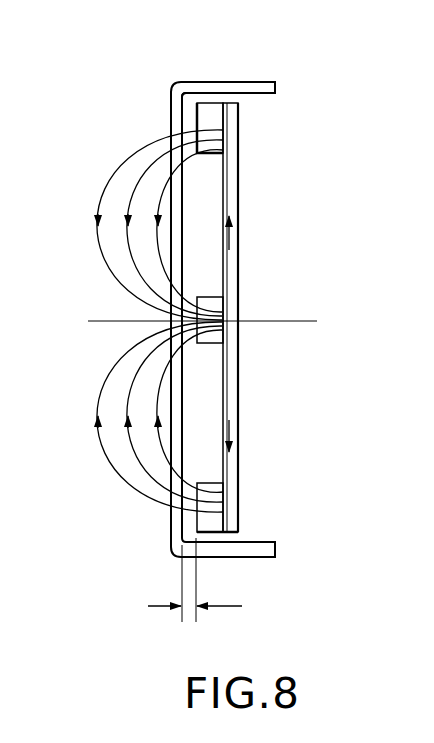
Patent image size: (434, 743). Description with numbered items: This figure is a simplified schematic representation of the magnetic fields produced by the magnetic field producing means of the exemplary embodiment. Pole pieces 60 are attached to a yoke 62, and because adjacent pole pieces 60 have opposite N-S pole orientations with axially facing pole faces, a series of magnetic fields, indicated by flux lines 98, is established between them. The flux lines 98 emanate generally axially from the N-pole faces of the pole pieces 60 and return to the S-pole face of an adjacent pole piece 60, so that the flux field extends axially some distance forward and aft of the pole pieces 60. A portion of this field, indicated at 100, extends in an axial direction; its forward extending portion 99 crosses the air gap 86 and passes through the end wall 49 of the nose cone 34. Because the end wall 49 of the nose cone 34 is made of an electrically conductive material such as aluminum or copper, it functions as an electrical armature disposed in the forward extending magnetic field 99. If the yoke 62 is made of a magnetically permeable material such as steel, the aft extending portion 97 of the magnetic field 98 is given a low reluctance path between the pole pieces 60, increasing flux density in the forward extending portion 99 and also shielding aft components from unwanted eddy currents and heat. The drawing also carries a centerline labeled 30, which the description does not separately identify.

The central axis / centerline 30 is at (285, 322).
The nose cone 34 is at (200, 81).
The end wall 49 is at (171, 116).
The pole pieces 60 is at (219, 103).
The yoke 62 is at (238, 124).
The air gap 86 is at (213, 580).
The aft extending portion of magnetic field 97 is at (229, 247).
The flux lines 98 is at (106, 162).
The forward extending portion of magnetic field 99 is at (193, 93).
The axially extending portion of magnetic field 100 is at (209, 181).